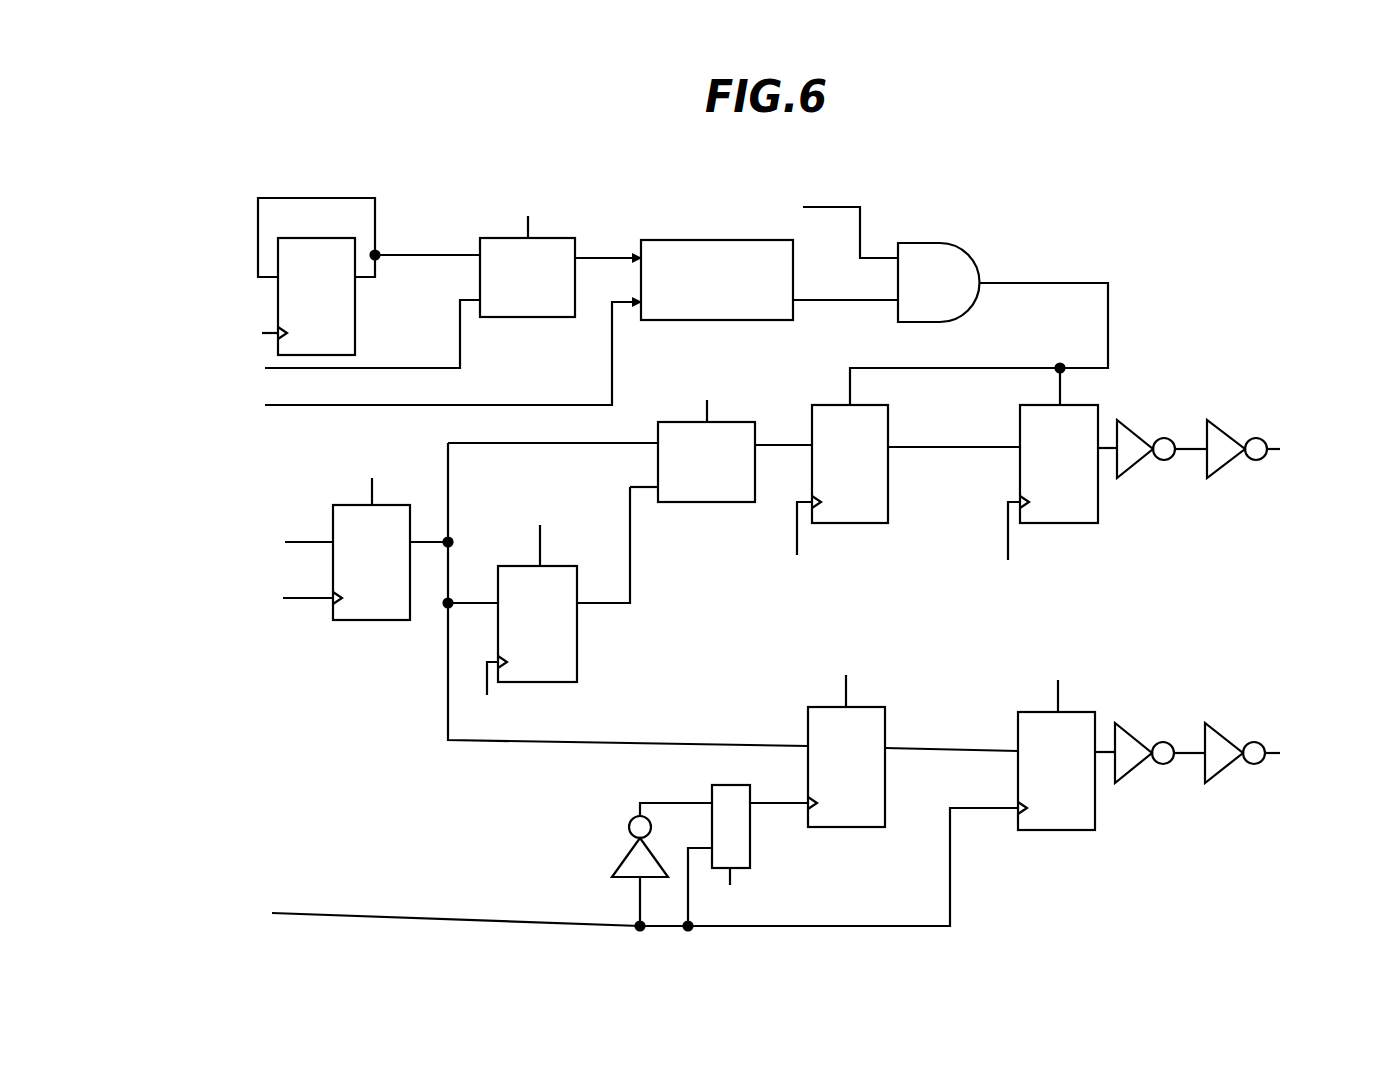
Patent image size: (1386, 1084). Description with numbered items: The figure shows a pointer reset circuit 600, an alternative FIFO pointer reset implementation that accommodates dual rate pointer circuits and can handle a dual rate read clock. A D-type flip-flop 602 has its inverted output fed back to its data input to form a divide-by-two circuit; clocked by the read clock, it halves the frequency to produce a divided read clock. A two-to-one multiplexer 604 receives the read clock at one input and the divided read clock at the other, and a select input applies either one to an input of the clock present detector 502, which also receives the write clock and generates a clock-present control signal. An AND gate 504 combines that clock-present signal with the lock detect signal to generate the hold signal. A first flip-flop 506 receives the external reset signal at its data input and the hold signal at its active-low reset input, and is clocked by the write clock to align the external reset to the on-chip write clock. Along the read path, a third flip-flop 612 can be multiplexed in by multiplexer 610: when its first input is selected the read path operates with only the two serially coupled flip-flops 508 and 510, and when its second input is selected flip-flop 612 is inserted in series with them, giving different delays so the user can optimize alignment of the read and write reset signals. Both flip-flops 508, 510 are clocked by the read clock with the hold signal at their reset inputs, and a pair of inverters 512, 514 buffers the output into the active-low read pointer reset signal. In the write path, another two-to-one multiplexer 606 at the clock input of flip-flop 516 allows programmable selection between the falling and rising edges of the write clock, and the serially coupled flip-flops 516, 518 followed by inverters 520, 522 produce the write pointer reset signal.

The pointer reset circuit 600 is at (955, 187).
The D-type flip-flop 602 is at (278, 293).
The 2:1 multiplexer 604 is at (565, 238).
The clock present detector 502 is at (660, 320).
The AND gate 504 is at (945, 243).
The first flip-flop 506 is at (333, 505).
The third flip-flop 612 is at (577, 657).
The multiplexer 610 is at (738, 502).
The flip-flop 508 is at (848, 523).
The flip-flop 510 is at (1060, 523).
The inverter 512 is at (1133, 430).
The inverter 514 is at (1225, 462).
The 2:1 multiplexer 606 is at (712, 783).
The flip-flop 516 is at (880, 707).
The flip-flop 518 is at (1093, 712).
The inverter 520 is at (1132, 770).
The inverter 522 is at (1228, 735).